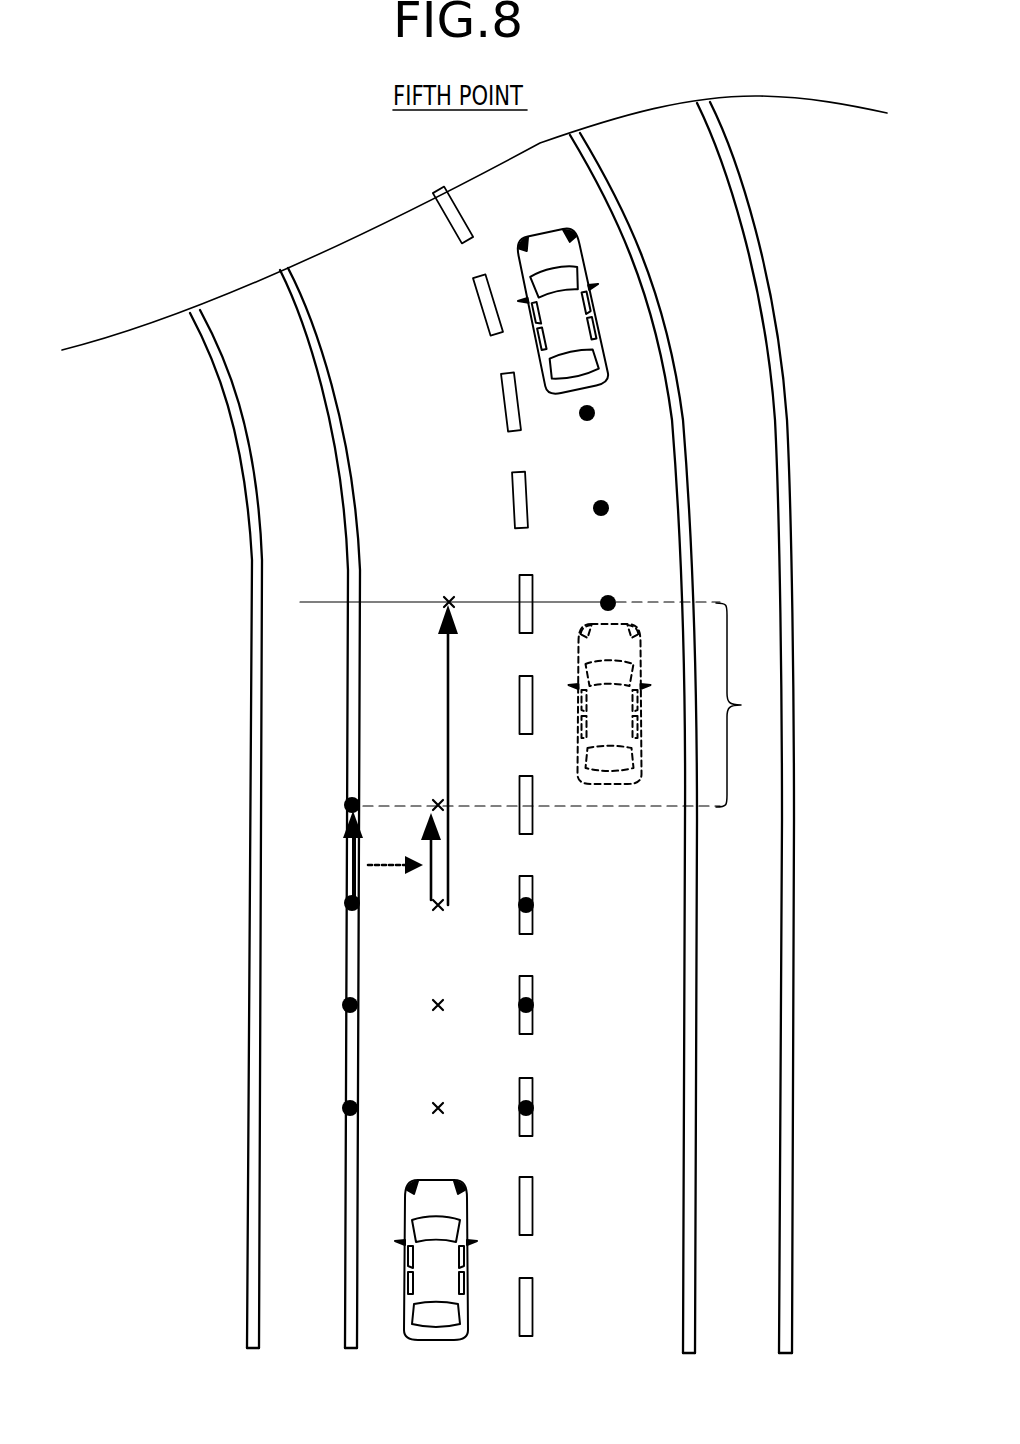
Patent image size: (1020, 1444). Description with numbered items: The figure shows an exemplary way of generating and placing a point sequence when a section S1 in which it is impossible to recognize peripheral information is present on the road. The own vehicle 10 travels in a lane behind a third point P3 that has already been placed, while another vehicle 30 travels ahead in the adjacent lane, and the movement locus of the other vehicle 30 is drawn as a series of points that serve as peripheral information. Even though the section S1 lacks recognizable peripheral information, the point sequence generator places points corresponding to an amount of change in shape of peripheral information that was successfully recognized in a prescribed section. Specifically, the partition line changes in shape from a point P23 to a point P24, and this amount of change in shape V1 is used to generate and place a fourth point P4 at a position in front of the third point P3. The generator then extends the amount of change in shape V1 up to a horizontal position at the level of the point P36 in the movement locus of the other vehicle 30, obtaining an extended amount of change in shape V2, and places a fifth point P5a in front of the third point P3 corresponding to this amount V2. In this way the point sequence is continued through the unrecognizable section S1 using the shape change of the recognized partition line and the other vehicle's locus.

The other vehicle 30 is at (597, 320).
The own vehicle 10 is at (463, 1268).
The fifth point P5a is at (447, 596).
The point of the other vehicle movement locus P36 is at (612, 597).
The fourth point P4 is at (438, 803).
The point on the partition line P24 is at (345, 806).
The point on the partition line P23 is at (345, 900).
The third point P3 is at (436, 908).
The amount of change in shape V1 is at (428, 880).
The extended amount of change in shape V2 is at (450, 880).
The section S1 is at (747, 705).